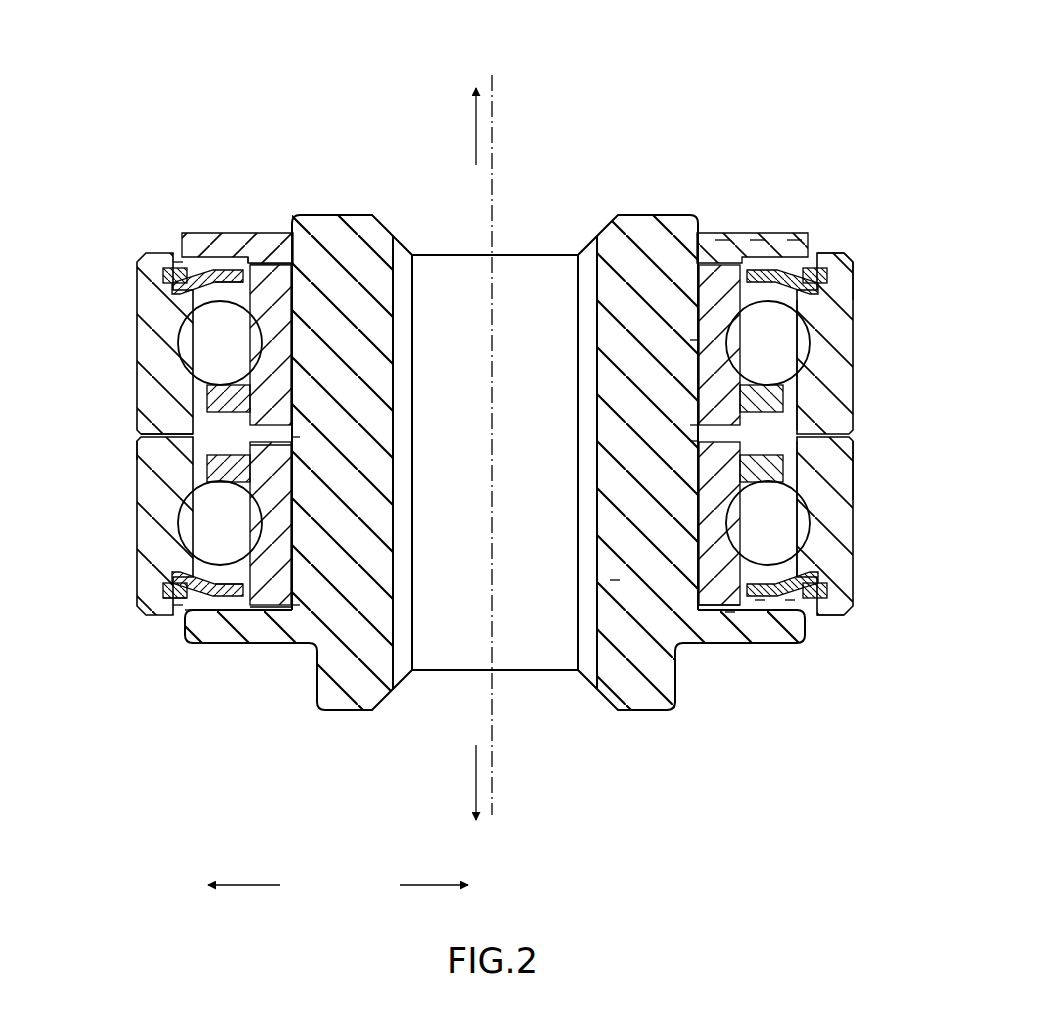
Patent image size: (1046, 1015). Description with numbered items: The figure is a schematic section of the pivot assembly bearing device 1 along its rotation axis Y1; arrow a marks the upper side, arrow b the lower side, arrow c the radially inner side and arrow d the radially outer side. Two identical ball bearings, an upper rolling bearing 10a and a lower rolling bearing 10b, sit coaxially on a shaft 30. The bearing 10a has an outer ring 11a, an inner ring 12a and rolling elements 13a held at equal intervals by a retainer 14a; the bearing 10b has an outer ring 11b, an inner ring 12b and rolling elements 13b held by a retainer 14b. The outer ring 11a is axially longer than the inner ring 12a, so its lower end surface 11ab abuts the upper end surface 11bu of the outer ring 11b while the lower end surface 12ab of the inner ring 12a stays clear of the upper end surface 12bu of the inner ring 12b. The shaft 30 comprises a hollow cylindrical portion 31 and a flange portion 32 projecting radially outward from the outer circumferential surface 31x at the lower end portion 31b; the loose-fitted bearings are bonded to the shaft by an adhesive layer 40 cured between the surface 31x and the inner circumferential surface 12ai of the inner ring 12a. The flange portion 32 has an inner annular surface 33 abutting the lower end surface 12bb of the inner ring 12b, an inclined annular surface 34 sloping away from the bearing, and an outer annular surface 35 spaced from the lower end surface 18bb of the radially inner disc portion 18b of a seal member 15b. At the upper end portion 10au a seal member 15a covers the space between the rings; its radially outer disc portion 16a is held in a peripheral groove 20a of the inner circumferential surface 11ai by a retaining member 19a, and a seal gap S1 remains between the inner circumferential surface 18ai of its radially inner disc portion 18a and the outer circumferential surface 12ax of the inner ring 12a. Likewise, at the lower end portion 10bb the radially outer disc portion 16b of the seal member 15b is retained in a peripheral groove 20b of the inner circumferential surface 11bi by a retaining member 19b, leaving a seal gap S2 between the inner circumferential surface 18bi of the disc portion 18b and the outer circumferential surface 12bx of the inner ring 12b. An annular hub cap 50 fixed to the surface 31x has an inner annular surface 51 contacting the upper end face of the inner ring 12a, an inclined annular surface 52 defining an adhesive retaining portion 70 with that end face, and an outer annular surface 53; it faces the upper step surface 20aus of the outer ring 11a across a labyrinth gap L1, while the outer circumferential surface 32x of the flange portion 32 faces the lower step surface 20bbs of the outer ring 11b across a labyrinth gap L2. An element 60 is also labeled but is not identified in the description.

The pivot assembly bearing device 1 is at (836, 86).
The upper rolling bearing 10a is at (860, 337).
The upper end portion of upper rolling bearing 10au is at (834, 284).
The lower rolling bearing 10b is at (862, 553).
The lower end portion of lower rolling bearing 10bb is at (845, 594).
The outer ring 11a is at (864, 266).
The lower end surface of outer ring 11ab is at (185, 436).
The inner circumferential surface of outer ring 11ai is at (800, 431).
The outer ring 11b is at (864, 492).
The inner circumferential surface of outer ring 11bi is at (800, 522).
The upper end surface of outer ring 11bu is at (148, 418).
The inner ring 12a is at (300, 342).
The lower end surface of inner ring 12ab is at (250, 445).
The inner circumferential surface of inner ring 12ai is at (692, 340).
The outer circumferential surface of inner ring 12ax is at (690, 430).
The inner ring 12b is at (300, 510).
The lower end surface of inner ring 12bb is at (292, 605).
The upper end surface of inner ring 12bu is at (272, 437).
The outer circumferential surface of inner ring 12bx is at (690, 441).
The rolling elements 13a is at (790, 345).
The rolling elements 13b is at (790, 530).
The retainer 14a is at (790, 400).
The retainer 14b is at (790, 465).
The seal member 15a is at (200, 283).
The seal member 15b is at (200, 585).
The radially outer disc portion 16a is at (215, 287).
The radially outer disc portion 16b is at (215, 580).
The radially inner disc portion 18a is at (253, 263).
The inner circumferential surface of radially inner disc portion 18ai is at (700, 268).
The radially inner disc portion 18b is at (255, 605).
The lower end surface of radially inner disc portion 18bb is at (775, 612).
The inner circumferential surface of radially inner disc portion 18bi is at (700, 603).
The retaining member 19a is at (165, 268).
The retaining member 19b is at (165, 598).
The peripheral groove 20a is at (146, 313).
The upper step surface 20aus is at (822, 242).
The peripheral groove 20b is at (146, 600).
The lower step surface 20bbs is at (170, 600).
The shaft 30 is at (674, 714).
The cylindrical portion 31 is at (645, 240).
The lower end portion 31b is at (628, 640).
The outer circumferential surface 31x is at (615, 582).
The flange portion 32 is at (822, 642).
The outer circumferential surface of flange portion 32x is at (192, 612).
The inner annular surface 33 is at (730, 612).
The inclined annular surface 34 is at (760, 600).
The outer annular surface 35 is at (790, 600).
The adhesive layer 40 is at (300, 240).
The hub cap 50 is at (818, 228).
The inner annular surface 51 is at (722, 240).
The inclined annular surface 52 is at (758, 240).
The outer annular surface 53 is at (795, 240).
The spacer ring 60 is at (256, 258).
The adhesive retaining portion 70 is at (268, 258).
The labyrinth gap L1 is at (170, 266).
The labyrinth gap L2 is at (180, 605).
The seal gap S1 is at (258, 262).
The seal gap S2 is at (272, 610).
The rotation axis Y1 is at (494, 806).
The arrow a is at (466, 126).
The arrow b is at (467, 782).
The arrow c is at (434, 901).
The arrow d is at (244, 901).